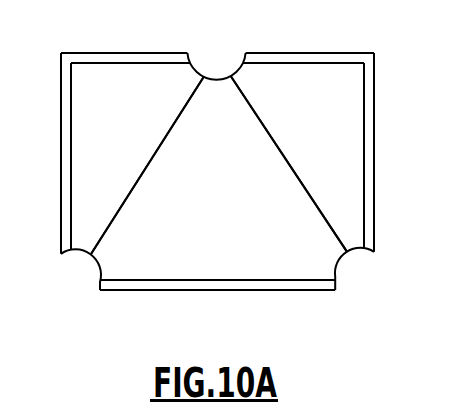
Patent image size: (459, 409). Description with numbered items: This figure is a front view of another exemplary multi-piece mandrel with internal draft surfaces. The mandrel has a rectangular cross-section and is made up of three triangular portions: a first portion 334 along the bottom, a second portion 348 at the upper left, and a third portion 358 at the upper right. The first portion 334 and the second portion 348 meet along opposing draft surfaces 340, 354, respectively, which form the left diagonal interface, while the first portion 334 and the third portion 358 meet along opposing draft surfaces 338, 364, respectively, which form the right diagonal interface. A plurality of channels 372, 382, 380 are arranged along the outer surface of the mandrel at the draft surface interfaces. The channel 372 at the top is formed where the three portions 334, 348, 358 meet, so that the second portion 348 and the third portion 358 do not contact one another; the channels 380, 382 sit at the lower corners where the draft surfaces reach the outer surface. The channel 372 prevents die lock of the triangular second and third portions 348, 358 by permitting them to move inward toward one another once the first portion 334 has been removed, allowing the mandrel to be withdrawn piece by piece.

The first portion 334 is at (125, 258).
The draft surface 338 is at (302, 182).
The draft surface 340 is at (133, 189).
The second portion 348 is at (124, 79).
The draft surface 354 is at (150, 157).
The third portion 358 is at (335, 121).
The draft surface 364 is at (266, 127).
The channel 372 is at (198, 68).
The channel 380 is at (91, 264).
The channel 382 is at (348, 258).